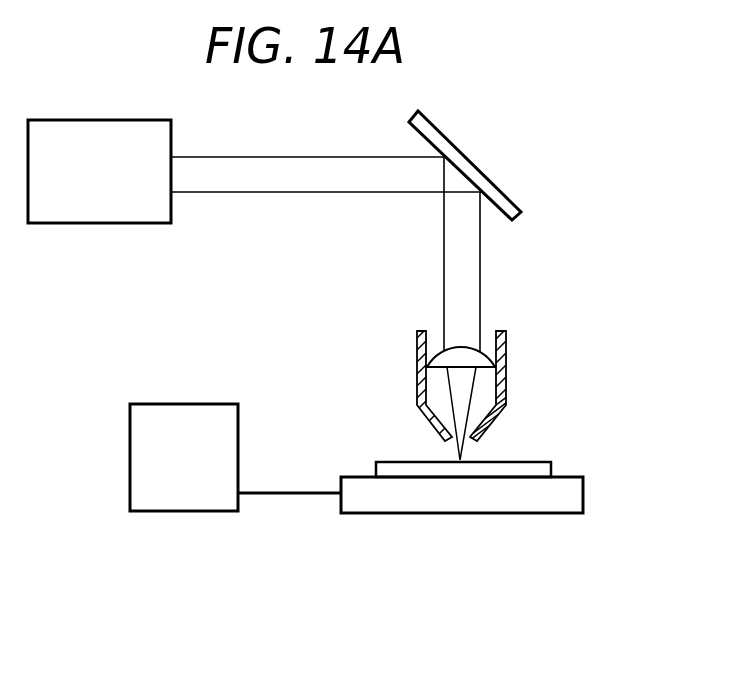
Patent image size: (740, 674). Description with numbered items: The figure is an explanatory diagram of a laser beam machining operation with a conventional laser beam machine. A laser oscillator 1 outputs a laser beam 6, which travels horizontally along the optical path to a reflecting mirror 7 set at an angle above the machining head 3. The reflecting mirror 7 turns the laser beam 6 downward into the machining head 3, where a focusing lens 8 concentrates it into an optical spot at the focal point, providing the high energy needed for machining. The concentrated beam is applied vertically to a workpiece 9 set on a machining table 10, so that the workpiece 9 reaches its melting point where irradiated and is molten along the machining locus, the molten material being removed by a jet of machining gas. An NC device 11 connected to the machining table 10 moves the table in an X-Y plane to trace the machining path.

The laser oscillator 1 is at (60, 120).
The laser beam 6 is at (316, 156).
The reflecting mirror 7 is at (441, 133).
The machining head 3 is at (508, 352).
The focusing lens 8 is at (443, 358).
The workpiece 9 is at (550, 470).
The machining table 10 is at (575, 497).
The NC device 11 is at (219, 403).